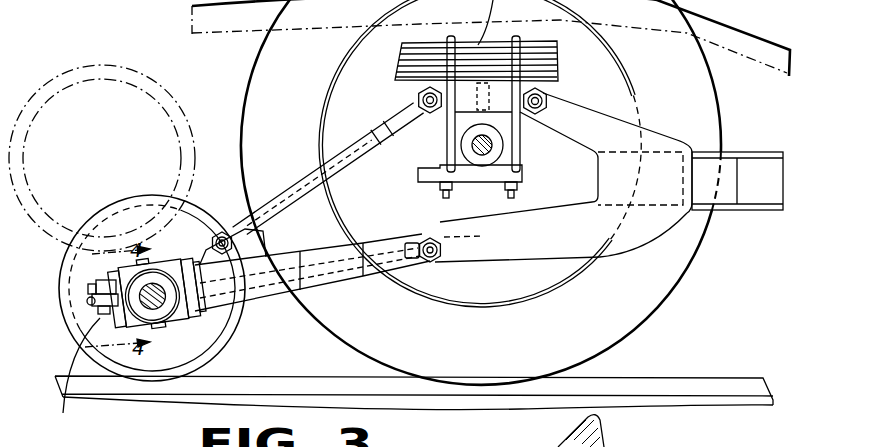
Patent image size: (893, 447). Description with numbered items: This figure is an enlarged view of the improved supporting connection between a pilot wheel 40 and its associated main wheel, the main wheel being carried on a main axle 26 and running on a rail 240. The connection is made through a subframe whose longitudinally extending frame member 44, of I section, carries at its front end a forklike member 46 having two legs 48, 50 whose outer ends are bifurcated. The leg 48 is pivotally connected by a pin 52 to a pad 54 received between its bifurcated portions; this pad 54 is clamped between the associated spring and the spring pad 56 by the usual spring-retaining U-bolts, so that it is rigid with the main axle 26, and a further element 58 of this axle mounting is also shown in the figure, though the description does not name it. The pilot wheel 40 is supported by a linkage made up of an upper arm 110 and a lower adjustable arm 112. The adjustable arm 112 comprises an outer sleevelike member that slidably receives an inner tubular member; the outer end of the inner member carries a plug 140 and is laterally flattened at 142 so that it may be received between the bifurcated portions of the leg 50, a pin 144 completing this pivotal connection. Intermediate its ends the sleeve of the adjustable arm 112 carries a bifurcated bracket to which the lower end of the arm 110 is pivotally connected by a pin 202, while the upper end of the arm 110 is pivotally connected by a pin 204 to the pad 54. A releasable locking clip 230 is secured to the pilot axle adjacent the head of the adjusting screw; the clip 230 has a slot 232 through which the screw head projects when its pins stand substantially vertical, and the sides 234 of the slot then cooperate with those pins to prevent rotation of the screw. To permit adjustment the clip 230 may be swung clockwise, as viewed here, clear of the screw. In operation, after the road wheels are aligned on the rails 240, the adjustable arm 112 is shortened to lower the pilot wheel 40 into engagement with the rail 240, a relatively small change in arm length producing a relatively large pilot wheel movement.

The main axle 26 is at (490, 143).
The pilot wheel 40 is at (110, 218).
The frame member 44 is at (732, 158).
The forklike member 46 is at (667, 230).
The leg 48 is at (643, 127).
The leg 50 is at (538, 258).
The pin 52 is at (545, 100).
The pad 54 is at (495, 97).
The spring pad 56 is at (462, 122).
The spring seat plate 58 is at (522, 157).
The arm 110 is at (300, 177).
The adjustable arm 112 is at (323, 297).
The plug 140 is at (479, 238).
The laterally flattened portion 142 is at (428, 238).
The pin 144 is at (432, 263).
The pin 202 is at (222, 232).
The pin 204 is at (418, 100).
The clip 230 is at (78, 292).
The slot 232 is at (97, 313).
The sides of the slot 234 is at (78, 378).
The rail 240 is at (640, 378).